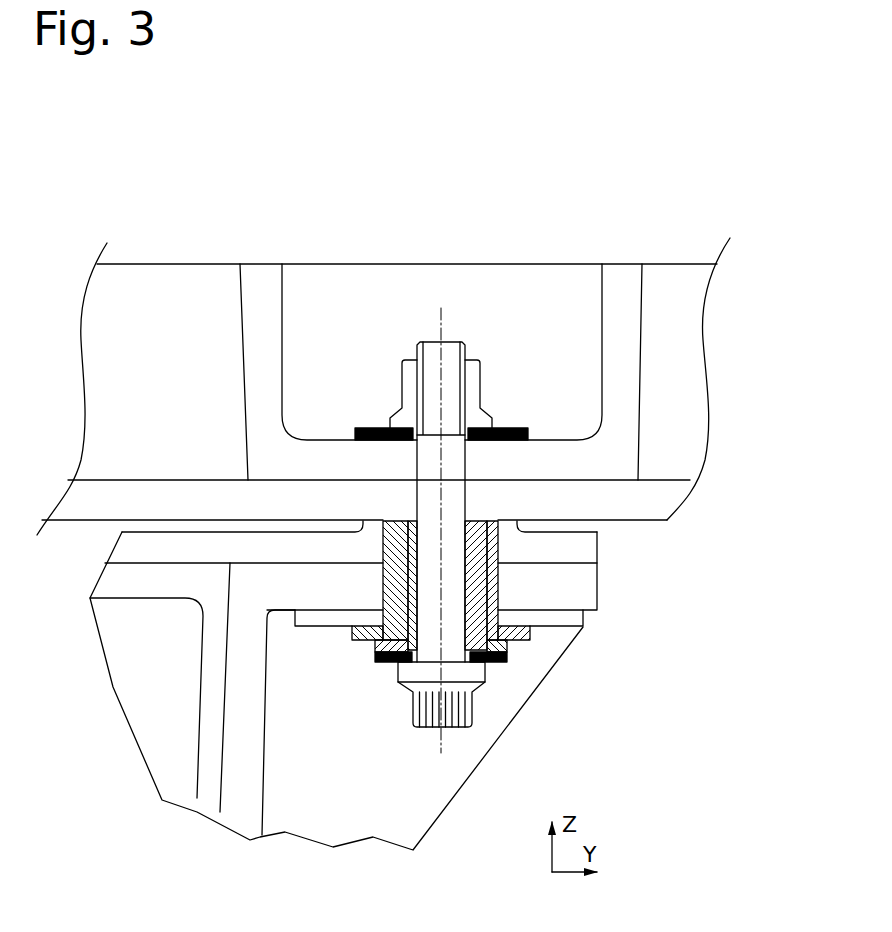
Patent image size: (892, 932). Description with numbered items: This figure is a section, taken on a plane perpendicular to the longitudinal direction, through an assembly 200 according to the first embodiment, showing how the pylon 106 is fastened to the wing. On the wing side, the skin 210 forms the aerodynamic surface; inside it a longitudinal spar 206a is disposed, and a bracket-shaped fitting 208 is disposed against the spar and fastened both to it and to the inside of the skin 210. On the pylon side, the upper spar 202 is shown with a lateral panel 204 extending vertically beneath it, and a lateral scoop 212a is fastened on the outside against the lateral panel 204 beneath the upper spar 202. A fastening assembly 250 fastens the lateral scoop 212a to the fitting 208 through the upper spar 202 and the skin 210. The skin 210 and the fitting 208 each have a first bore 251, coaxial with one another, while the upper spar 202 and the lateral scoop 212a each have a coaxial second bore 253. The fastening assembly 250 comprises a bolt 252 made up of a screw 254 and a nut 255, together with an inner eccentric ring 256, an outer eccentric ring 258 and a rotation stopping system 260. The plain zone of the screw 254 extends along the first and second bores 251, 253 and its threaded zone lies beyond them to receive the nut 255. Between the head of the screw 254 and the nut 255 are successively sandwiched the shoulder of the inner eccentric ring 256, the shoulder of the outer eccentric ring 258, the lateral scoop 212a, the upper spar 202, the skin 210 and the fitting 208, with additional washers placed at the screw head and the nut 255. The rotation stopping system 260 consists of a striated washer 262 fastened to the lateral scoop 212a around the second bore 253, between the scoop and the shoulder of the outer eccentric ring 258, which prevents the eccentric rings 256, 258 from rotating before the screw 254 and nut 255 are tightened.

The assembly 200 is at (182, 225).
The fastening assembly 250 is at (253, 207).
The bolt 252 is at (345, 190).
The longitudinal spar 206a is at (183, 389).
The fitting 208 is at (630, 408).
The skin 210 is at (670, 497).
The first bore 251 is at (417, 467).
The nut 255 is at (473, 383).
The upper spar 202 is at (125, 551).
The second bore 253 is at (498, 585).
The striated washer 262 is at (573, 618).
The outer eccentric ring 258 is at (530, 637).
The inner eccentric ring 256 is at (508, 648).
The screw 254 is at (456, 710).
The rotation stopping system 260 is at (642, 670).
The pylon 106 is at (130, 756).
The lateral panel 204 is at (212, 793).
The lateral scoop 212a is at (308, 792).